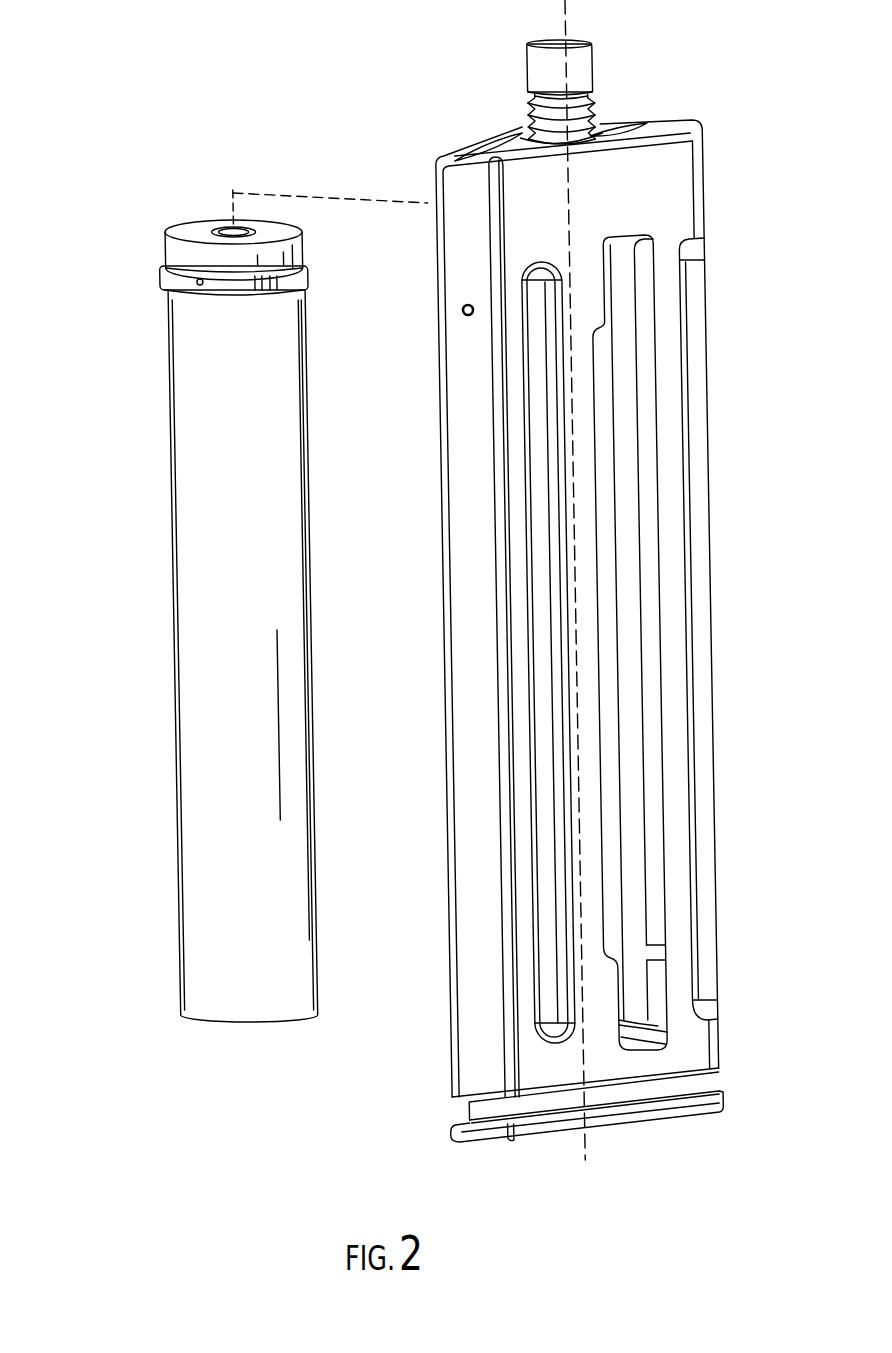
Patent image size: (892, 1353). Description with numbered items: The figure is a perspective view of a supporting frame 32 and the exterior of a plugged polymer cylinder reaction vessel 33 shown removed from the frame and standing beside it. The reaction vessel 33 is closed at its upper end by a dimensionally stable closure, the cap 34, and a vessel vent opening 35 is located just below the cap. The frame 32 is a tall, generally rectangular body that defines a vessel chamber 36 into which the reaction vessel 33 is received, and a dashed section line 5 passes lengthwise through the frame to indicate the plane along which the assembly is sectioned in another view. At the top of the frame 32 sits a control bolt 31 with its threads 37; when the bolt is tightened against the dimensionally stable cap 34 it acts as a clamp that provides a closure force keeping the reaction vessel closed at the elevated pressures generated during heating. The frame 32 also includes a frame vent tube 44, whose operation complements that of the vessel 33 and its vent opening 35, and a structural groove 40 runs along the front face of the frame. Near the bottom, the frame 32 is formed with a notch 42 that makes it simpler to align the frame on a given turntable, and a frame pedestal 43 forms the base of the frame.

The section line 5- 5 is at (562, 2).
The control bolt 31 is at (584, 60).
The supporting frame 32 is at (676, 170).
The reaction vessel 33 is at (198, 651).
The cap 34 is at (174, 257).
The vessel vent opening 35 is at (189, 285).
The vessel chamber 36 is at (640, 407).
The threads 37 is at (598, 112).
The structural groove 40 is at (529, 614).
The notch 42 is at (689, 1082).
The frame pedestal 43 is at (689, 1104).
The frame vent tube 44 is at (698, 580).